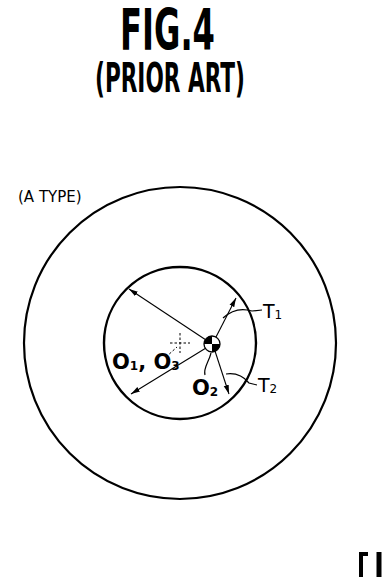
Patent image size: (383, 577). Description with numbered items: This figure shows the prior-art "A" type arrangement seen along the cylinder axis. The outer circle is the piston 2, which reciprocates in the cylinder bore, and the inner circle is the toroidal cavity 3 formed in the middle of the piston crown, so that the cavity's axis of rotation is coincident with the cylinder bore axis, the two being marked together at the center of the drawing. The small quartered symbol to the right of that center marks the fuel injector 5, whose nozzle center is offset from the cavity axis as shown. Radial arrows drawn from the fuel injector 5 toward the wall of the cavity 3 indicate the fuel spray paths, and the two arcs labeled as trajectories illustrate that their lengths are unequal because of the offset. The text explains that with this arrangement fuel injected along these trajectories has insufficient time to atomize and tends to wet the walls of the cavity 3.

The piston 2 is at (292, 233).
The toroidal cavity 3 is at (215, 275).
The fuel injector 5 is at (207, 337).